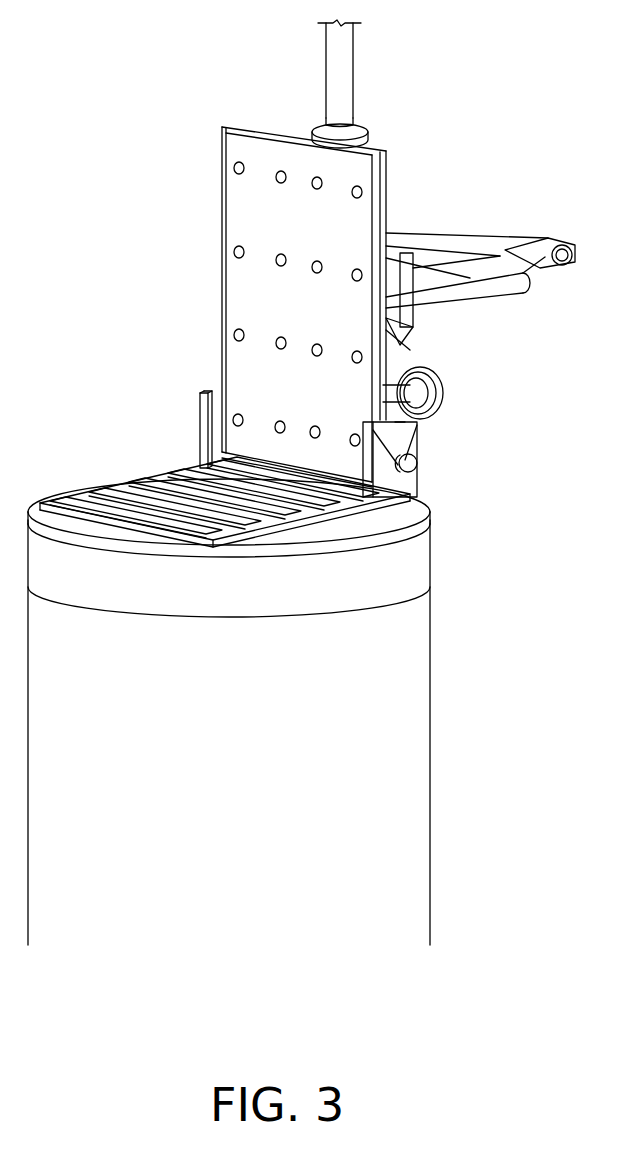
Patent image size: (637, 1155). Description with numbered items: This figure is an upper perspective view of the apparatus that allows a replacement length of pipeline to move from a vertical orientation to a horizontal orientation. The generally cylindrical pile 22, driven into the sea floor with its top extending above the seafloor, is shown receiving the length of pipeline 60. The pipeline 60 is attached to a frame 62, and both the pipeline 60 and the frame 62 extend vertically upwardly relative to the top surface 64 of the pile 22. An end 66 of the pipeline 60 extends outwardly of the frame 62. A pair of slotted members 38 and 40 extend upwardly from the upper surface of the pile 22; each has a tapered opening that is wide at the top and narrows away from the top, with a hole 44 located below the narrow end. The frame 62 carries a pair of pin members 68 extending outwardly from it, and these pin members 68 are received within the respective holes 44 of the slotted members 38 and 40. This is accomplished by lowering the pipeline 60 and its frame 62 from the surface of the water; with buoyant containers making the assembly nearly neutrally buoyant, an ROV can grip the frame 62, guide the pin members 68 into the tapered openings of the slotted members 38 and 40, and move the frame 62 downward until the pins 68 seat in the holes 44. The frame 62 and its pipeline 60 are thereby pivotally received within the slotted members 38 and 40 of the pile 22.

The pile 22 is at (410, 695).
The slotted member 38 is at (418, 440).
The slotted member 40 is at (200, 410).
The hole 44 is at (220, 435).
The pipeline 60 is at (348, 70).
The frame 62 is at (383, 192).
The top surface 64 is at (408, 518).
The end 66 is at (444, 382).
The pin member 68 is at (418, 461).